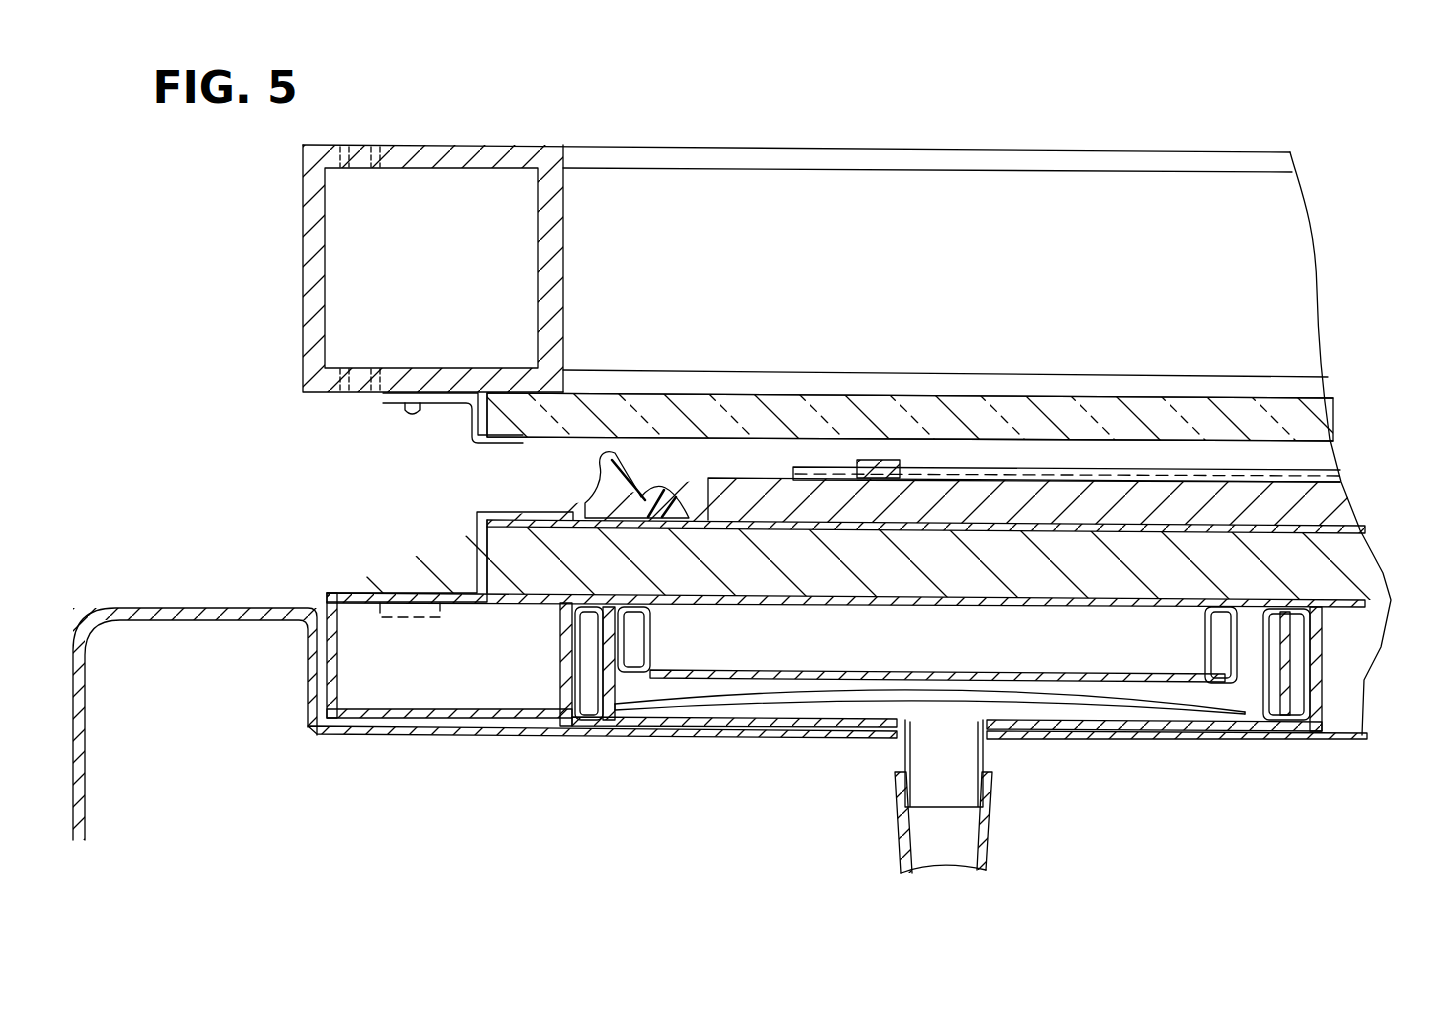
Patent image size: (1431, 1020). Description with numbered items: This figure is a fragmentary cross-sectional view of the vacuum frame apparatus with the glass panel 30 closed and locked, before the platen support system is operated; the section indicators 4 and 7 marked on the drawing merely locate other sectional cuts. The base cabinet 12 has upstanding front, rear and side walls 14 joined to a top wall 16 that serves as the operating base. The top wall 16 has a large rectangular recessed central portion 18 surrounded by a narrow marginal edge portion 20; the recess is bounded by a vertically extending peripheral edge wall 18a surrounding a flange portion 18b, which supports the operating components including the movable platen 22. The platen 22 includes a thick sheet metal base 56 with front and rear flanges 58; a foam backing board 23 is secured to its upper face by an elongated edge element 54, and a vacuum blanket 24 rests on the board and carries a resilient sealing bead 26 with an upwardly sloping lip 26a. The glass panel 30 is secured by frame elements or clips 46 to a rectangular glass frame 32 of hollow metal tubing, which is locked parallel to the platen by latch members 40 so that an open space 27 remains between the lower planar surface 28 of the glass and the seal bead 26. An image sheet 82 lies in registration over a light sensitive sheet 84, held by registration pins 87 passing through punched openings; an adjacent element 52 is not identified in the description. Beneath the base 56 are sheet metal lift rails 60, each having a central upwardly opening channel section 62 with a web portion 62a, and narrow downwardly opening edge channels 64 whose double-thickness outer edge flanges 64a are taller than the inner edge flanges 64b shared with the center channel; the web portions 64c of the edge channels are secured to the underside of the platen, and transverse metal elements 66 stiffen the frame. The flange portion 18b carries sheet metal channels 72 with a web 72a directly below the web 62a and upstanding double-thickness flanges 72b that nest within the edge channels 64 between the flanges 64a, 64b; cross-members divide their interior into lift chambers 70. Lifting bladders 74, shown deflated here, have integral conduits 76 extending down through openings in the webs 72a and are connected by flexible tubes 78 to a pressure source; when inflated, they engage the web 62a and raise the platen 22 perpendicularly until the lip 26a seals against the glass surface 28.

The base cabinet 12 is at (76, 614).
The front, rear and side walls 14 is at (86, 741).
The top wall 16 is at (172, 608).
The recessed central portion 18 is at (466, 733).
The peripheral edge wall 18a is at (326, 660).
The flange portion 18b is at (370, 745).
The marginal edge portion 20 is at (262, 607).
The platen 22 is at (443, 584).
The foam backing board 23 is at (1370, 565).
The vacuum blanket 24 is at (1345, 522).
The sealing bead 26 is at (634, 524).
The lip 26a is at (620, 456).
The open space 27 is at (594, 447).
The planar surface 28 is at (645, 440).
The glass panel 30 is at (846, 416).
The glass frame 32 is at (296, 306).
The latch member 40 is at (1143, 448).
The frame elements 46 is at (410, 418).
The substrate 52 is at (770, 497).
The edge element 54 is at (408, 580).
The sheet metal base 56 is at (902, 585).
The front and rear flanges 58 is at (376, 708).
The lift rails 60 is at (710, 685).
The channel section 62 is at (755, 692).
The web portion 62a is at (836, 692).
The edge channels 64 is at (648, 650).
The outer edge flanges 64a is at (567, 632).
The inner edge flanges 64b is at (660, 662).
The web portions 64c is at (622, 614).
The metal elements 66 is at (1362, 637).
The lift chambers 70 is at (660, 708).
The sheet metal channels 72 is at (1132, 742).
The web 72a is at (1030, 722).
The flanges 72b is at (603, 678).
The lifting bladders 74 is at (864, 700).
The conduit 76 is at (982, 760).
The flexible tubes 78 is at (898, 840).
The image sheet 82 is at (975, 468).
The light sensitive sheet 84 is at (1236, 497).
The registration pins 87 is at (882, 460).
The section line 4 is at (278, 635).
The section line 7 is at (593, 453).